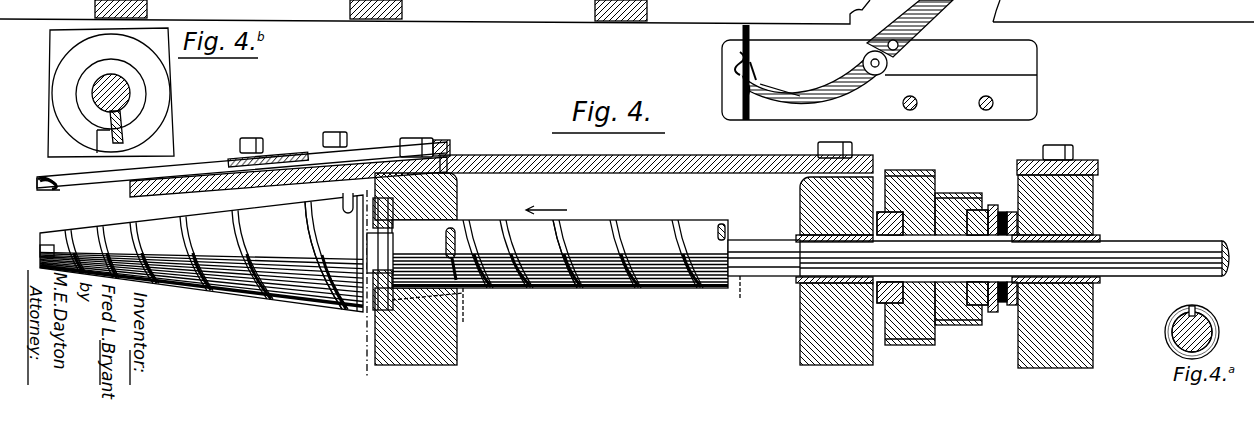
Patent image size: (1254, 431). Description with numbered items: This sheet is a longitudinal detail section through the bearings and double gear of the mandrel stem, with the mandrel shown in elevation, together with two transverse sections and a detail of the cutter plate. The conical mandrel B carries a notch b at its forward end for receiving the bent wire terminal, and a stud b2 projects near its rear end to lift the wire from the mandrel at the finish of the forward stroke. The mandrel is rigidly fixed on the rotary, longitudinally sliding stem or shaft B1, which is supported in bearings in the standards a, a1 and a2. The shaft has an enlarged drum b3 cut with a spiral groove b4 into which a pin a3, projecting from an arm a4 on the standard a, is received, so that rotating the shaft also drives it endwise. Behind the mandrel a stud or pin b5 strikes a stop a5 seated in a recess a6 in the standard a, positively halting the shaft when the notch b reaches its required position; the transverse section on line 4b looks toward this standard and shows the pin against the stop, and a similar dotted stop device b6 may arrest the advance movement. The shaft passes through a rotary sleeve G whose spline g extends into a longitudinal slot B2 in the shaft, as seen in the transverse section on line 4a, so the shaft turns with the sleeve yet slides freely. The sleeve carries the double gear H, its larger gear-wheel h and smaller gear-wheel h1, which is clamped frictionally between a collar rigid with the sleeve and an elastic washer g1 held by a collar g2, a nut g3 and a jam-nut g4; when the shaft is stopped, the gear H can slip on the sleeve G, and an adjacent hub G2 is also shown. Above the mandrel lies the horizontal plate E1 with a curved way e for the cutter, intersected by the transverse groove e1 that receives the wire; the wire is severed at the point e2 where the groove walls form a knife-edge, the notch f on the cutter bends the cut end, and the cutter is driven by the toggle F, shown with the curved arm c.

In FIG. 4, the horizontal plate E1 is at (176, 167).
In FIG. 7, the horizontal plate E1 is at (879, 80).
In FIG. 4, the toggle F is at (345, 140).
In FIG. 7, the toggle F is at (793, 88).
In FIG. 4, the transverse groove e1 is at (56, 185).
In FIG. 7, the transverse groove e1 is at (743, 43).
In FIG. 4, the notch b is at (46, 252).
In FIG. 4, the conical mandrel B is at (201, 255).
In FIG. 4, the stud or pin b5 is at (348, 300).
In FIG. 4B, the stud or pin b5 is at (125, 128).
In FIG. 4, the section line 4b is at (357, 282).
In FIG. 4, the stud b2 is at (343, 204).
In FIG. 4, the standard a is at (457, 190).
In FIG. 4B, the standard a is at (111, 92).
In FIG. 4, the recess a6 is at (380, 254).
In FIG. 4B, the recess a6 is at (111, 83).
In FIG. 4, the pin a3 is at (446, 235).
In FIG. 4B, the pin a3 is at (102, 135).
In FIG. 4, the stop a5 is at (438, 299).
In FIG. 4, the arm a4 is at (470, 309).
In FIG. 4, the drum b3 is at (560, 254).
In FIG. 4, the spiral groove b4 is at (552, 254).
In FIG. 4, the stop device b6 is at (730, 288).
In FIG. 4, the stem or shaft B1 is at (781, 247).
In FIG. 4A, the stem or shaft B1 is at (1192, 332).
In FIG. 4, the longitudinal slot B2 is at (762, 256).
In FIG. 4A, the longitudinal slot B2 is at (1212, 315).
In FIG. 4, the standard a1 is at (800, 200).
In FIG. 4, the rotary sleeve G is at (797, 288).
In FIG. 4, the hub G2 is at (877, 304).
In FIG. 4, the gear-wheel h is at (910, 245).
In FIG. 4, the double gear H is at (928, 197).
In FIG. 4, the gear-wheel h1 is at (958, 249).
In FIG. 4, the elastic washer g1 is at (974, 222).
In FIG. 4, the collar g2 is at (988, 225).
In FIG. 4, the nut g3 is at (1001, 212).
In FIG. 4, the jam-nut g4 is at (1010, 210).
In FIG. 4, the standard a2 is at (1066, 256).
In FIG. 4, the section line 4a is at (1063, 263).
In FIG. 4A, the spline g is at (1192, 312).
In FIG. 4A, the arm c is at (1221, 332).
In FIG. 7, the arm c is at (822, 95).
In FIG. 7, the curved way e is at (740, 63).
In FIG. 7, the cutting point e2 is at (743, 83).
In FIG. 7, the notch f is at (752, 82).